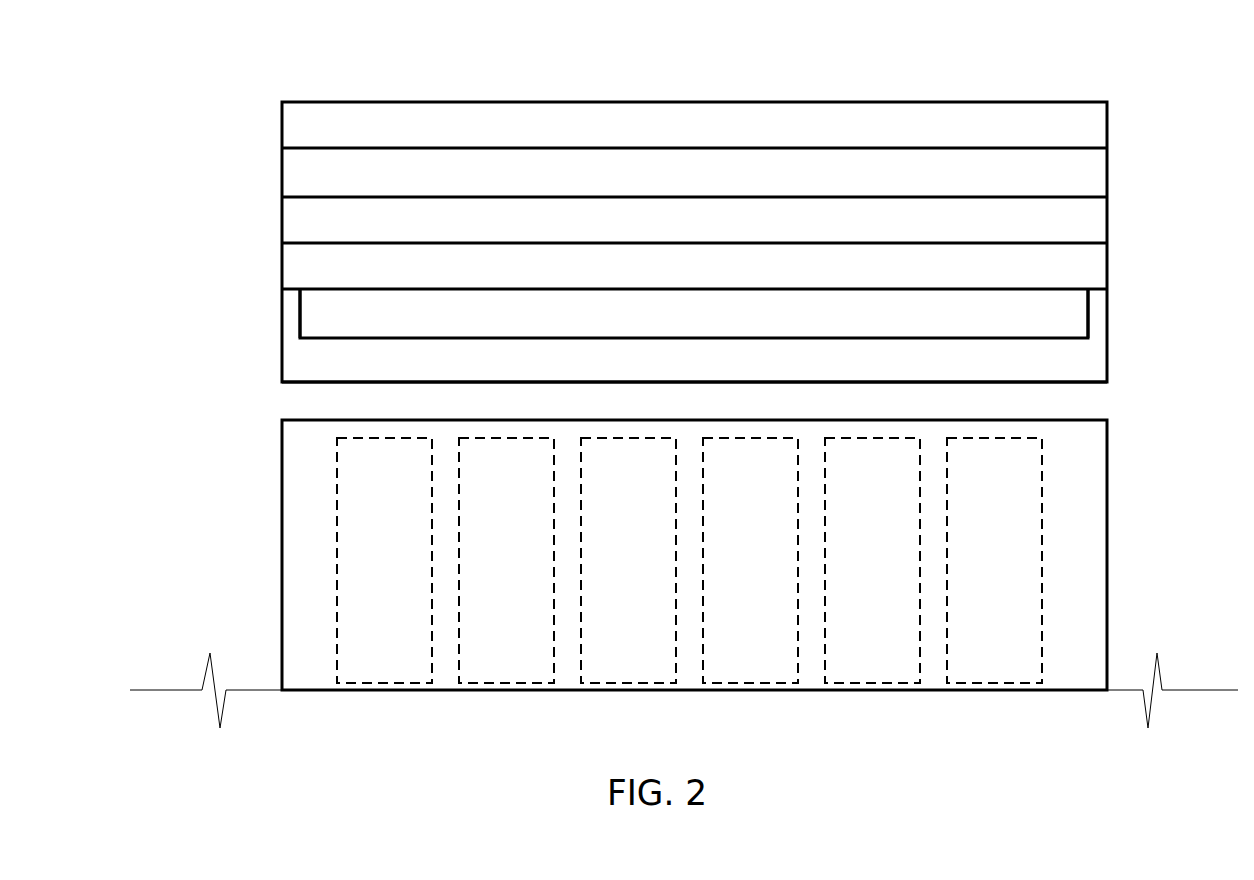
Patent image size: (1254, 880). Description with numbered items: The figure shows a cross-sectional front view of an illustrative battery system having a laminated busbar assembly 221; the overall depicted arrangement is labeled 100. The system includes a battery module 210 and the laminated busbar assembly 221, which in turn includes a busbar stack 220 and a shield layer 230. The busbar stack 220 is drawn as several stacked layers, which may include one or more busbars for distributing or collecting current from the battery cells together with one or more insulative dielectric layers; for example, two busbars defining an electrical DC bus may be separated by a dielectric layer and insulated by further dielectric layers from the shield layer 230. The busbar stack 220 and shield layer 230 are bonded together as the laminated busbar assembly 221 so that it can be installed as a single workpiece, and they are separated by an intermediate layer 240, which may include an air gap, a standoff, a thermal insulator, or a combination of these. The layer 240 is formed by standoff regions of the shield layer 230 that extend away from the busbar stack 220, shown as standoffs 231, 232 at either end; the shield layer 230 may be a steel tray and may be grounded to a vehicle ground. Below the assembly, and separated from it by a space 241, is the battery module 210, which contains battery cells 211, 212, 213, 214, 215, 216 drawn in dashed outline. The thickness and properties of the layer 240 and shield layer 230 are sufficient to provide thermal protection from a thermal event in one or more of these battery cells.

The semiconductor device 100 is at (636, 37).
The battery module 210 is at (748, 555).
The battery cell 211 is at (355, 574).
The battery cell 212 is at (477, 574).
The battery cell 213 is at (599, 574).
The battery cell 214 is at (721, 574).
The battery cell 215 is at (843, 574).
The battery cell 216 is at (965, 574).
The busbar stack 220 is at (241, 102).
The laminated busbar assembly 221 is at (685, 242).
The shield layer 230 is at (639, 335).
The standoff 231 is at (300, 323).
The standoff 232 is at (1033, 313).
The layer 240 is at (694, 313).
The space 241 is at (282, 400).